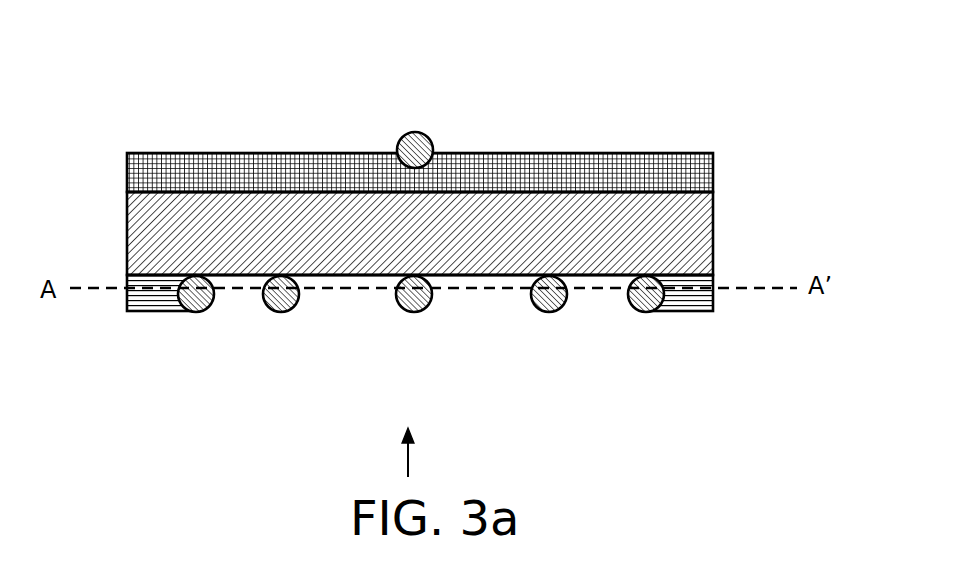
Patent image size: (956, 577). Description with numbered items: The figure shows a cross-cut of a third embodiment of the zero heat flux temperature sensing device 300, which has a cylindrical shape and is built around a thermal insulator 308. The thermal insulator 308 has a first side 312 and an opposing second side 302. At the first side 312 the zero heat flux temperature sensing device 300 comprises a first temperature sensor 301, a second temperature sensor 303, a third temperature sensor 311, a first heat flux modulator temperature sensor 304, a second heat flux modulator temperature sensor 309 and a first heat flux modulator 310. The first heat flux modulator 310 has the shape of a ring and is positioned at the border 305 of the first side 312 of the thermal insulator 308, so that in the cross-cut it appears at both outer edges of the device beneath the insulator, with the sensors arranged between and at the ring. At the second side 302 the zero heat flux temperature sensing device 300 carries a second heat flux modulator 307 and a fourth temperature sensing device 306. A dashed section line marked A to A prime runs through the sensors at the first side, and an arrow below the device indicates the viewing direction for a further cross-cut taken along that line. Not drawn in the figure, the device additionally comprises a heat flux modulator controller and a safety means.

The zero heat flux temperature sensing device 300 is at (420, 203).
The first temperature sensor 301 is at (414, 313).
The second side 302 is at (277, 190).
The second temperature sensor 303 is at (284, 313).
The first heat flux modulator temperature sensor 304 is at (201, 313).
The border 305 is at (127, 275).
The fourth temperature sensing device 306 is at (415, 131).
The second heat flux modulator 307 is at (715, 170).
The thermal insulator 308 is at (715, 232).
The second heat flux modulator temperature sensor 309 is at (645, 313).
The first heat flux modulator 310 is at (147, 313).
The third temperature sensor 311 is at (550, 313).
The first side 312 is at (480, 277).